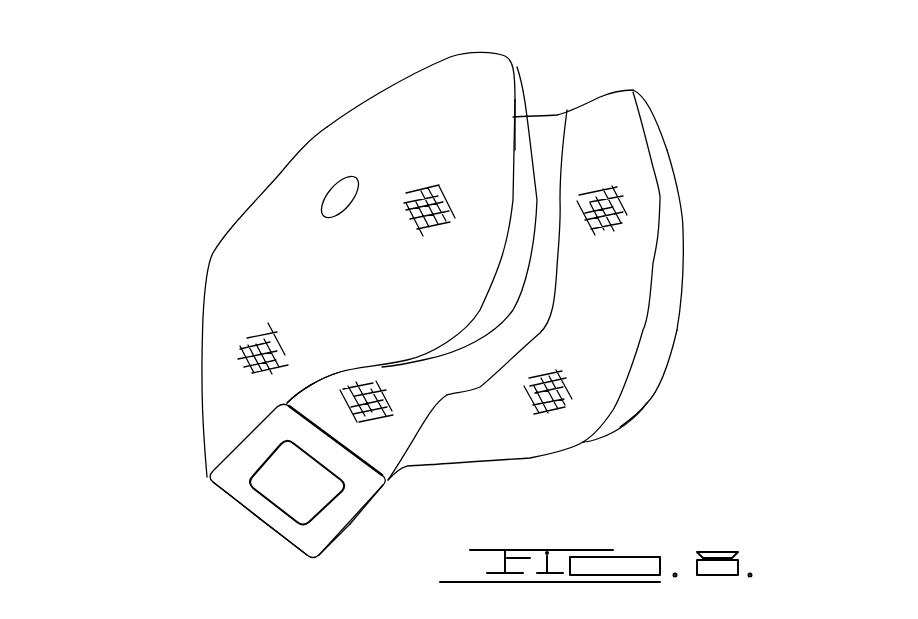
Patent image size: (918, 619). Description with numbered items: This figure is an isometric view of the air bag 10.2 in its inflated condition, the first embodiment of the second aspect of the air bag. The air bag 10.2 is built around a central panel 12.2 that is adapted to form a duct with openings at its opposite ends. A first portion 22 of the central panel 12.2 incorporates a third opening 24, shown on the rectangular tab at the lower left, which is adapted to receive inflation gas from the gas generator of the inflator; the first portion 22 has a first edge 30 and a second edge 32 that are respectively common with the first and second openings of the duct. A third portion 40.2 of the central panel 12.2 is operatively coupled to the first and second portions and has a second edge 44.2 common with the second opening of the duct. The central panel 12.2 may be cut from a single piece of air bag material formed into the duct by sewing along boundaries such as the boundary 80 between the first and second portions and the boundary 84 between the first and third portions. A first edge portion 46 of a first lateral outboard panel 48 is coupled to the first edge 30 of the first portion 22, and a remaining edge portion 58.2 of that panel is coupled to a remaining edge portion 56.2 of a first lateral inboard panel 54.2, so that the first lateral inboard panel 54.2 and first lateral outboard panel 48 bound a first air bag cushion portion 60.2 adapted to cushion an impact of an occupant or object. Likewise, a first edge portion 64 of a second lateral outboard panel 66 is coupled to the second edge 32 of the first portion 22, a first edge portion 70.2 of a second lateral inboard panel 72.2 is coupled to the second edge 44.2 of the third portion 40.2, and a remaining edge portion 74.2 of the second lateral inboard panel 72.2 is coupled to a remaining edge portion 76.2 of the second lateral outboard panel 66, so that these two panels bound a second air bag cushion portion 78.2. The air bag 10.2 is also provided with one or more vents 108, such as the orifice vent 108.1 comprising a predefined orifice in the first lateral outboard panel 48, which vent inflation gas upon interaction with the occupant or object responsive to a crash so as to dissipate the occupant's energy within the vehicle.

The air bag 10.2 is at (137, 203).
The first air bag cushion portion 60.2 is at (303, 90).
The first lateral outboard panel 48 is at (398, 113).
The vent 108 is at (270, 171).
The orifice vent 108.1 is at (333, 187).
The remaining edge portion of the first lateral outboard panel 58.2 is at (515, 140).
The remaining edge portion of the first lateral inboard panel 56.2 is at (517, 118).
The first lateral inboard panel 54.2 is at (520, 235).
The second lateral inboard panel 72.2 is at (608, 137).
The remaining edge portion of the second lateral inboard panel 74.2 is at (662, 210).
The remaining edge portion of the second lateral outboard panel 76.2 is at (653, 245).
The second lateral outboard panel 66 is at (680, 300).
The second air bag cushion portion 78.2 is at (658, 400).
The second edge of the third portion 44.2 is at (510, 360).
The first edge portion of the second lateral inboard panel 70.2 is at (453, 393).
The boundary 84 is at (340, 424).
The first edge portion of the first lateral outboard panel 46 is at (280, 404).
The third opening 24 is at (310, 499).
The first edge of the first portion 30 is at (230, 485).
The first portion of the central panel 22 is at (240, 498).
The boundary 80 is at (290, 543).
The second edge of the first portion 32 is at (333, 543).
The first edge portion of the second lateral outboard panel 64 is at (388, 482).
The central panel 12.2 is at (417, 442).
The third portion of the central panel 40.2 is at (313, 387).